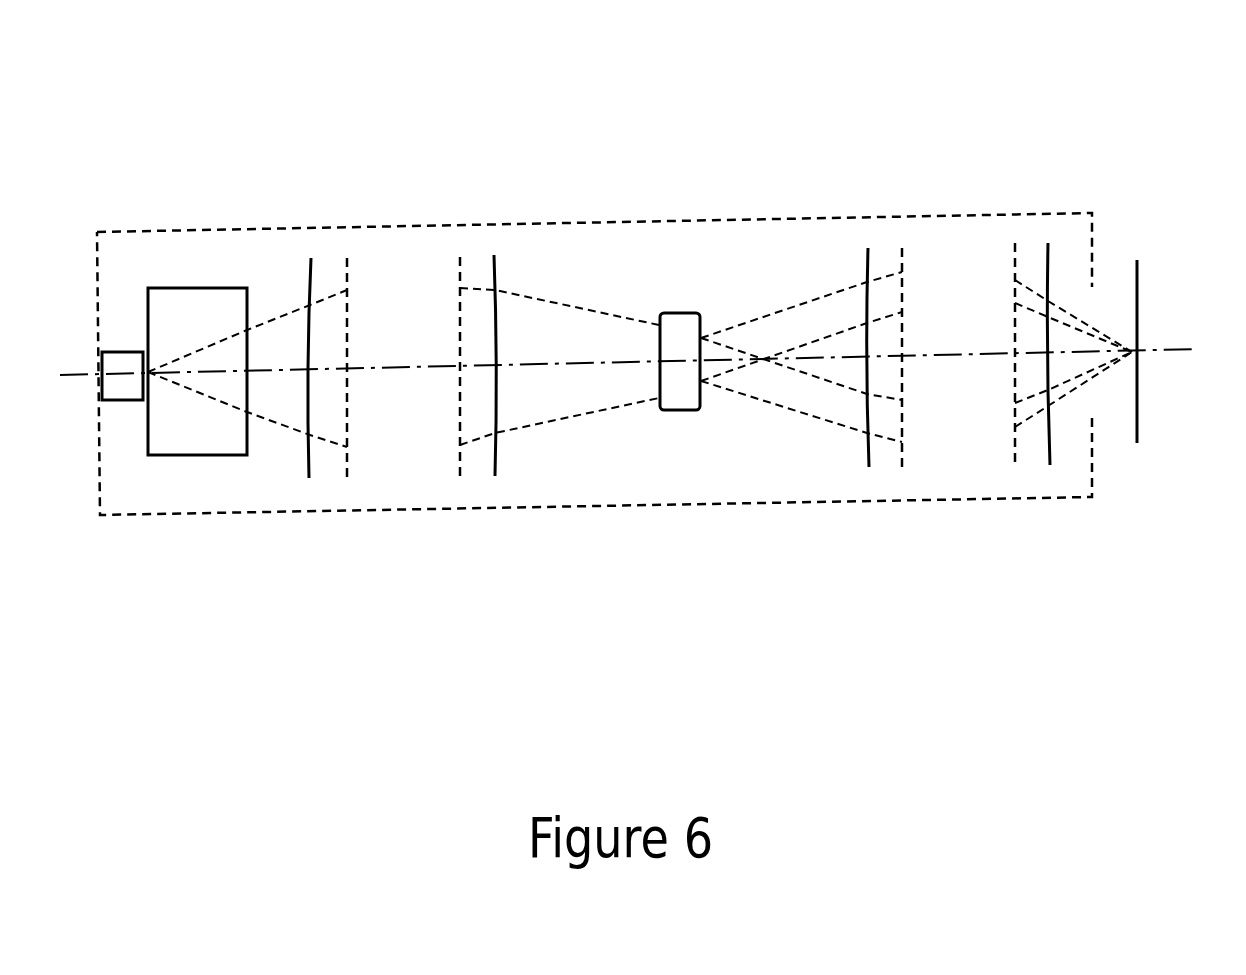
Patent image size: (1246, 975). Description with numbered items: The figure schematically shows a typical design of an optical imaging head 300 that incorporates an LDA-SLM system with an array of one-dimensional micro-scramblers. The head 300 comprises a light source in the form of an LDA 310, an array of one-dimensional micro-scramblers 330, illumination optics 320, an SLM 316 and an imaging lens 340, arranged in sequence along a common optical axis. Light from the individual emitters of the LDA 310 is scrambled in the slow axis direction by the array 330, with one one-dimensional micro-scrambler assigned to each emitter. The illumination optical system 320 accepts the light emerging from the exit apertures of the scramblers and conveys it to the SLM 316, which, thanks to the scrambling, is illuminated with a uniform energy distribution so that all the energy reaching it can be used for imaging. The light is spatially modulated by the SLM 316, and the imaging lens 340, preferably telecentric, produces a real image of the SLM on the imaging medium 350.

The optical imaging head 300 is at (562, 222).
The LDA 310 is at (122, 410).
The array of 1D MSs 330 is at (197, 477).
The illumination optics 320 is at (407, 470).
The SLM 316 is at (678, 403).
The imaging lens 340 is at (960, 460).
The imaging medium 350 is at (1138, 413).